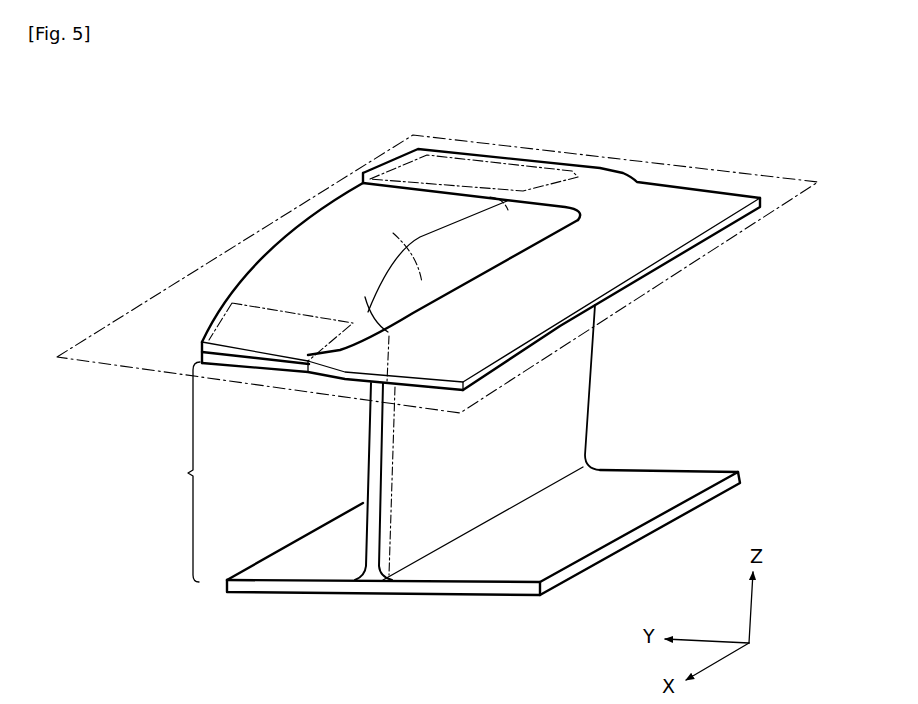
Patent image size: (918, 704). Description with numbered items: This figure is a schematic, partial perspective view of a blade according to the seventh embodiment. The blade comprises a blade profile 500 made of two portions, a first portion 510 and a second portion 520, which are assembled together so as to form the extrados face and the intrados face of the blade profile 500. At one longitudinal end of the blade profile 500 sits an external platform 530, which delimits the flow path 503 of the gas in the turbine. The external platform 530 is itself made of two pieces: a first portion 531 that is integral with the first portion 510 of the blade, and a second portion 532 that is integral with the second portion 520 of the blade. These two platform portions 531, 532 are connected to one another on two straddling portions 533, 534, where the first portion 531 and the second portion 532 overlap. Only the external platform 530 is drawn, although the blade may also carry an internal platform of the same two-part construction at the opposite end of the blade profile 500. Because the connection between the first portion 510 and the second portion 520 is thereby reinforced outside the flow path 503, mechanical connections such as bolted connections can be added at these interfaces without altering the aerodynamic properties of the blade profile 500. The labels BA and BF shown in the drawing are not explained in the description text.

The blade profile 500 is at (762, 377).
The flow path 503 is at (176, 472).
The first portion of the blade 510 is at (370, 428).
The second portion of the blade 520 is at (590, 400).
The external platform 530 is at (773, 177).
The first portion of the platform 531 is at (332, 213).
The second portion of the platform 532 is at (667, 228).
The straddling portion 533 is at (258, 366).
The straddling portion 534 is at (476, 173).
The bonding area BA is at (645, 142).
The bottom flange BF is at (341, 613).